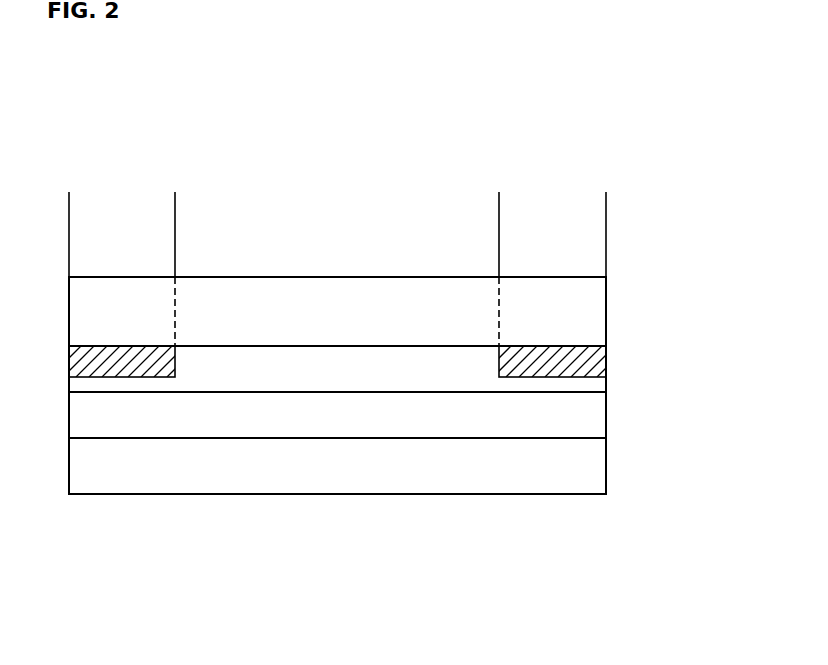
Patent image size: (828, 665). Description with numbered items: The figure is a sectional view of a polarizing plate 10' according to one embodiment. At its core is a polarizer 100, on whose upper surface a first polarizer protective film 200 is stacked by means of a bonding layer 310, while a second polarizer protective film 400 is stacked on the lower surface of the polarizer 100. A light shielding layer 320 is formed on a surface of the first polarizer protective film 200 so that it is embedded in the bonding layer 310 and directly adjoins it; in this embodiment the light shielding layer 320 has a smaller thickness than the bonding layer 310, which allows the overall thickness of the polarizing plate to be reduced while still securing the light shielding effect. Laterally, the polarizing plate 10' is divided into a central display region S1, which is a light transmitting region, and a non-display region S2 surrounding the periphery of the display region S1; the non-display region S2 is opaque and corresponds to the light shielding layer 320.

The polarizing plate 10' is at (337, 268).
The polarizer 100 is at (595, 412).
The first polarizer protective film 200 is at (595, 316).
The bonding layer 310 is at (282, 373).
The light shielding layer 320 is at (598, 360).
The second polarizer protective film 400 is at (595, 463).
The display region S1 is at (497, 197).
The non-display region S2 is at (173, 197).